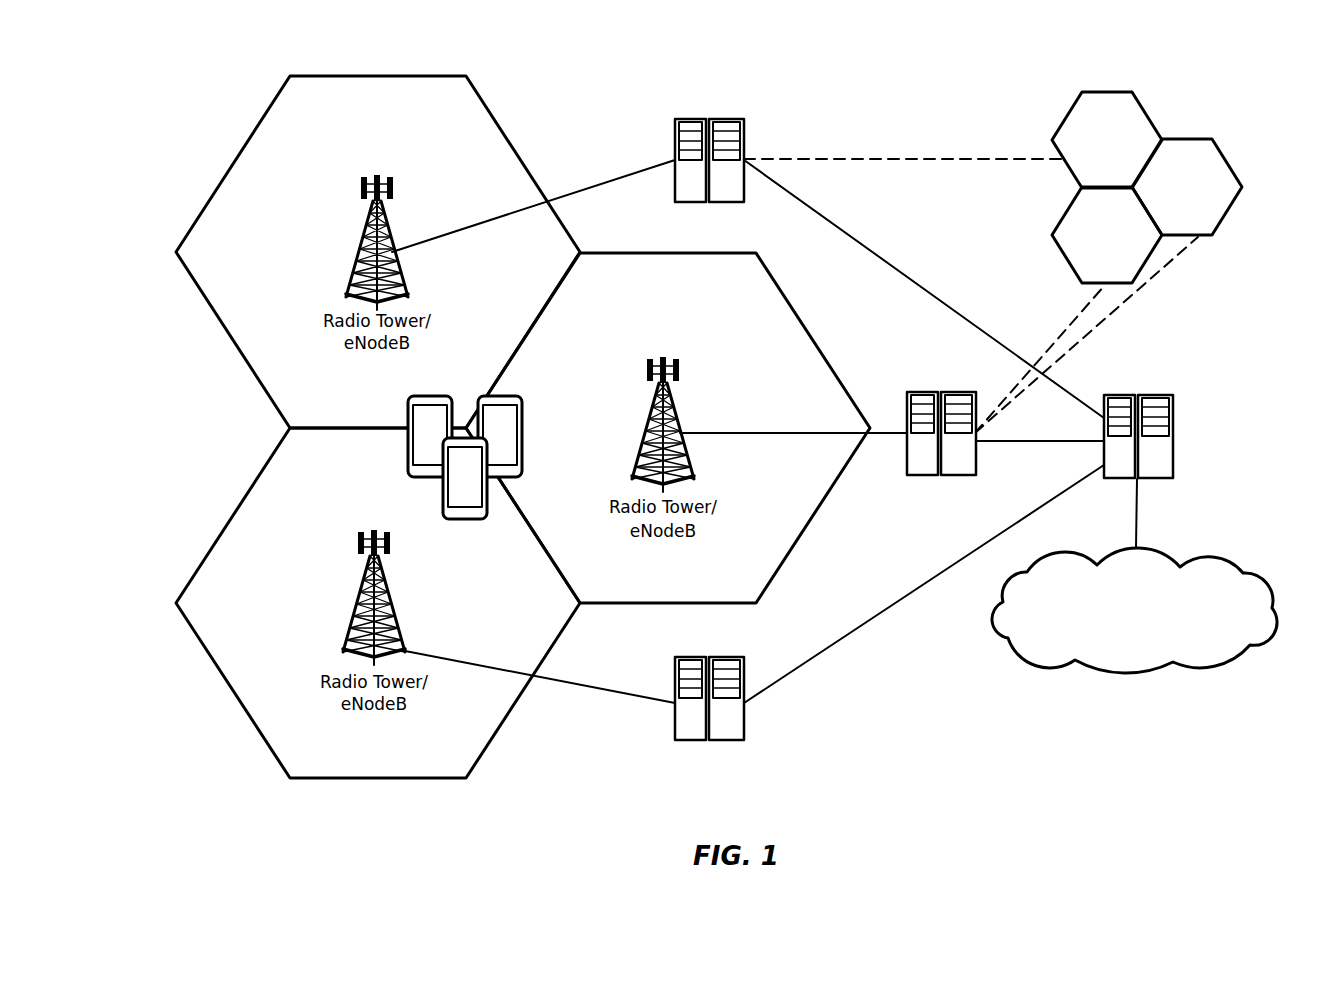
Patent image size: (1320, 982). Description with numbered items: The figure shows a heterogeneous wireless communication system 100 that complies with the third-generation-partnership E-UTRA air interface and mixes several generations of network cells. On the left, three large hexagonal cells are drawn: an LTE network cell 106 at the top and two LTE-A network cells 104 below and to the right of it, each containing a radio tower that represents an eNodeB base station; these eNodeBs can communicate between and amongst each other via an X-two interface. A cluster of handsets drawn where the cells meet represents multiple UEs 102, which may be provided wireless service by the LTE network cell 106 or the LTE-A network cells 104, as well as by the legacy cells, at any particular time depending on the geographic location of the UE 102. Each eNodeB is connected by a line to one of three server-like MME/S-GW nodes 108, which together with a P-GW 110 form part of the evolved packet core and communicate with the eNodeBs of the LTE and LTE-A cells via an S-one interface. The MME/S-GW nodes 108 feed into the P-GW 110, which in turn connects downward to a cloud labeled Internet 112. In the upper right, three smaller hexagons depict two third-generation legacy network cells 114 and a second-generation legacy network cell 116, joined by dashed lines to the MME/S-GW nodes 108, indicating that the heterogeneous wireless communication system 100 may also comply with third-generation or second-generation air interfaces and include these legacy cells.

The heterogeneous wireless communication system 100 is at (157, 39).
The user equipment (UE) 102 is at (467, 463).
The LTE-A network cell 104 is at (533, 515).
The LTE network cell 106 is at (386, 252).
The mobility management entity / serving gateway (MME/S-GW) 108 is at (837, 423).
The PDN gateway (P-GW) 110 is at (1173, 425).
The Internet 112 is at (1081, 610).
The 3G legacy network cell 114 is at (1108, 186).
The 2G legacy network cell 116 is at (1208, 184).